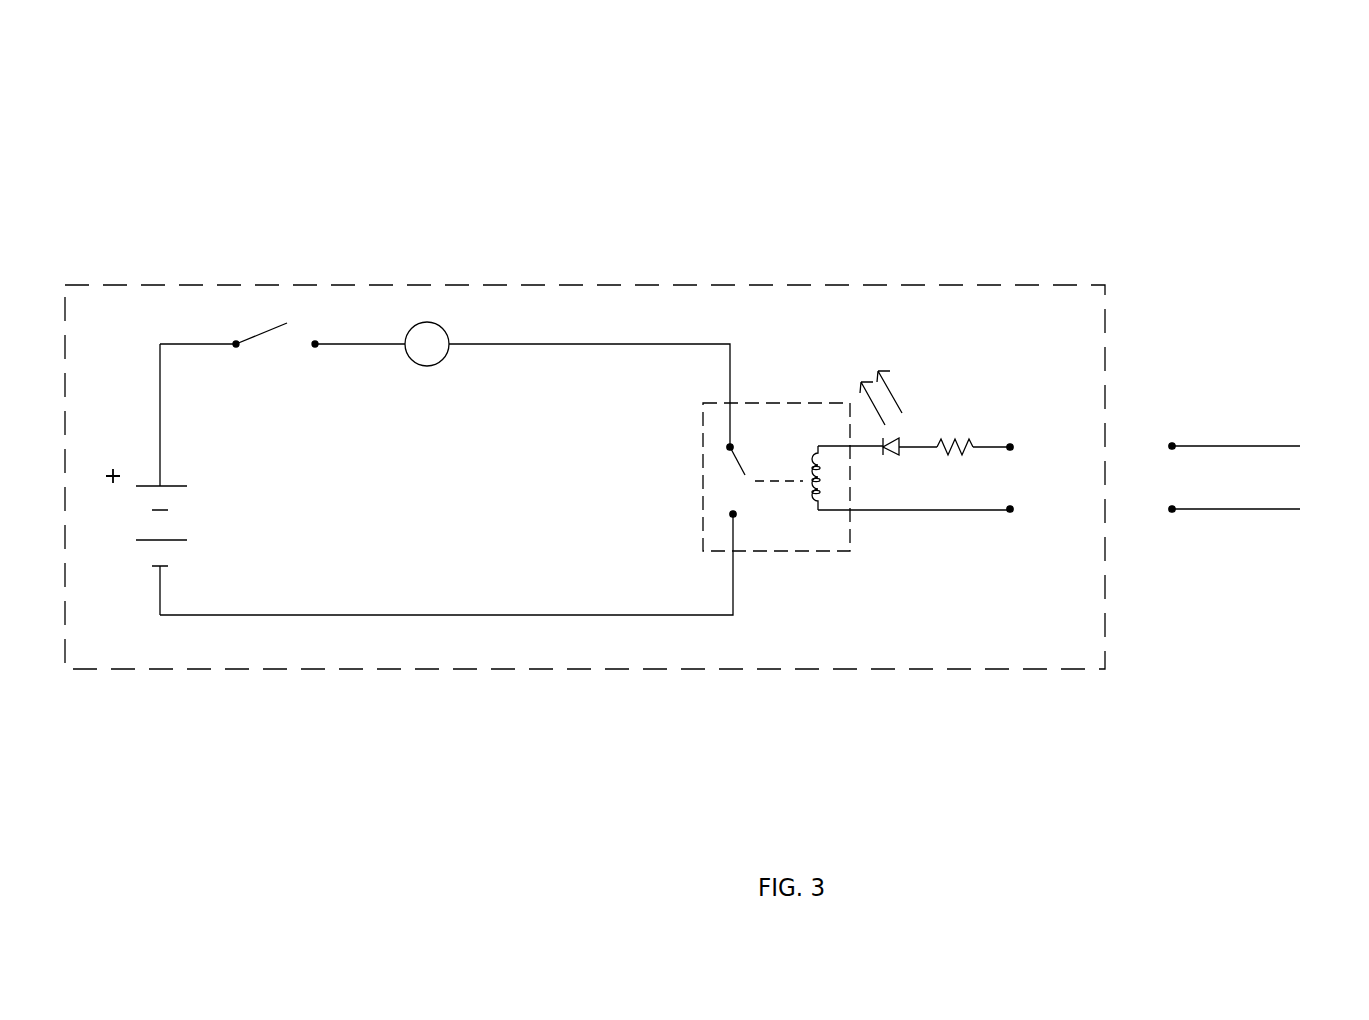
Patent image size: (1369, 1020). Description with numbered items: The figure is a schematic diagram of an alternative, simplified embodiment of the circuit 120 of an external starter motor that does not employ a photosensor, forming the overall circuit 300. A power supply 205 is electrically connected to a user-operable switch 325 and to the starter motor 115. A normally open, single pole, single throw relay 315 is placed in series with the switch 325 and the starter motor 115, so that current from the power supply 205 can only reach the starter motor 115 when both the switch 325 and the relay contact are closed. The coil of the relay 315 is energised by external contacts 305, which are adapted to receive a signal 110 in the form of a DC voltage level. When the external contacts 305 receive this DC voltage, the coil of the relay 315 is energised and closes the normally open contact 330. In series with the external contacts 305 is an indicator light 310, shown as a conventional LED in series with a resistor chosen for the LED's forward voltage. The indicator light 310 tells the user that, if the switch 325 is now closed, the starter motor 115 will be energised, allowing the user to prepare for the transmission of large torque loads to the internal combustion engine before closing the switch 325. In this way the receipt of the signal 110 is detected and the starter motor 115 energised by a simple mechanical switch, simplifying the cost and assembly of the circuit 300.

The circuit 300 is at (125, 155).
The circuit 120 is at (922, 640).
The switch 325 is at (248, 326).
The starter motor 115 is at (433, 345).
The power supply 205 is at (182, 528).
The relay 315 is at (760, 428).
The normally open contact 330 is at (730, 447).
The indicator light 310 is at (903, 437).
The external contacts 305 is at (1010, 446).
The signal 110 is at (1290, 477).